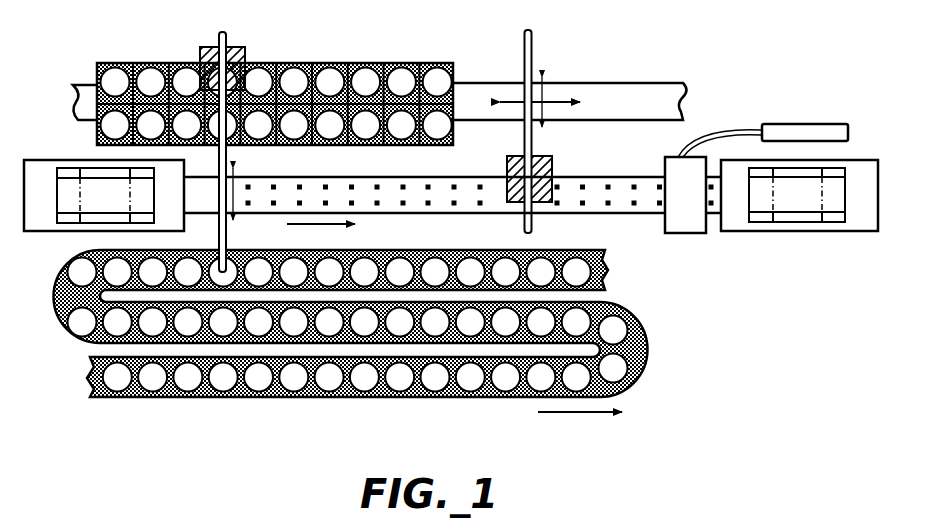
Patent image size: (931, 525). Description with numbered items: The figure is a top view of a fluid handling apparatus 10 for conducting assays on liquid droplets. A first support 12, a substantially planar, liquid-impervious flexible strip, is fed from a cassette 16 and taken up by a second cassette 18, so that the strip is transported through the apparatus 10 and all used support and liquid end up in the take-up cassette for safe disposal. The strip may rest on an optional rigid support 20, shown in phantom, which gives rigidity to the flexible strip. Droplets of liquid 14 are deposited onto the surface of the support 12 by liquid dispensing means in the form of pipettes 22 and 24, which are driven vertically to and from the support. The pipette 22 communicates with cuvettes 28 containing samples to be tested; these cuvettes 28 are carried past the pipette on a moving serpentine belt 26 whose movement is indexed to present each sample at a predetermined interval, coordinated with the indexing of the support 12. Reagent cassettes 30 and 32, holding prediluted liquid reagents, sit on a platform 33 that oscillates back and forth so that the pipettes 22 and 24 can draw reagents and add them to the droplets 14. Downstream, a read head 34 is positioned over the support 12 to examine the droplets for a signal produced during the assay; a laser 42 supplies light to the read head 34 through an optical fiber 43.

The fluid handling apparatus 10 is at (725, 372).
The first support 12 is at (610, 212).
The droplets of liquid 14 is at (274, 207).
The cassette 16 is at (83, 168).
The cassette 18 is at (830, 222).
The rigid support 20 is at (493, 204).
The pipette 22 is at (233, 47).
The pipette 24 is at (535, 213).
The serpentine belt 26 is at (648, 323).
The cuvettes 28 is at (112, 327).
The reagent cassette 30 is at (112, 125).
The reagent cassette 32 is at (292, 72).
The platform 33 is at (383, 63).
The read head 34 is at (680, 235).
The laser 42 is at (797, 124).
The optical fiber 43 is at (715, 132).